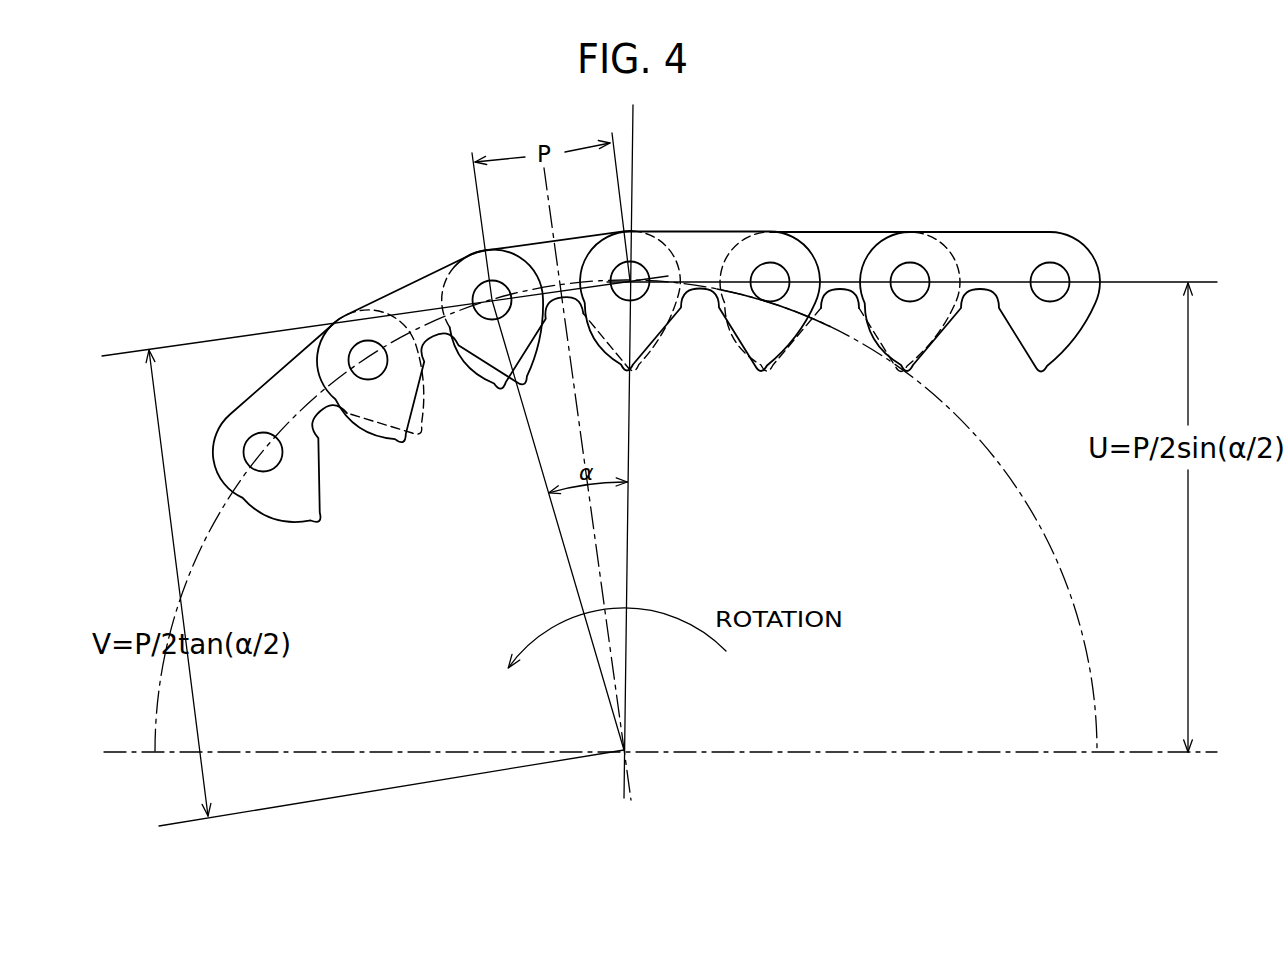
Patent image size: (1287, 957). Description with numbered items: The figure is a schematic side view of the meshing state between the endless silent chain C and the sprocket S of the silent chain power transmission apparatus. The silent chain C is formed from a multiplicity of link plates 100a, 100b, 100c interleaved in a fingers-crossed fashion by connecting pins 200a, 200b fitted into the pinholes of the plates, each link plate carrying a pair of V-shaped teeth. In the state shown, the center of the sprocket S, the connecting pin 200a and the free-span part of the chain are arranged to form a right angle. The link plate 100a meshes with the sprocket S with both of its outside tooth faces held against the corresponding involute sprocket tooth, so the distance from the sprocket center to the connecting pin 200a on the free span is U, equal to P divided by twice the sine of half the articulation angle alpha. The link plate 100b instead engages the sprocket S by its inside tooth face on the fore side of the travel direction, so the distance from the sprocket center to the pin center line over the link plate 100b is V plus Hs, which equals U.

The link plate 100a is at (537, 255).
The link plate 100b is at (707, 240).
The link plate 100c is at (851, 242).
The connecting pin 200a is at (640, 270).
The connecting pin 200b is at (770, 270).
The silent chain C is at (646, 337).
The sprocket S is at (933, 694).